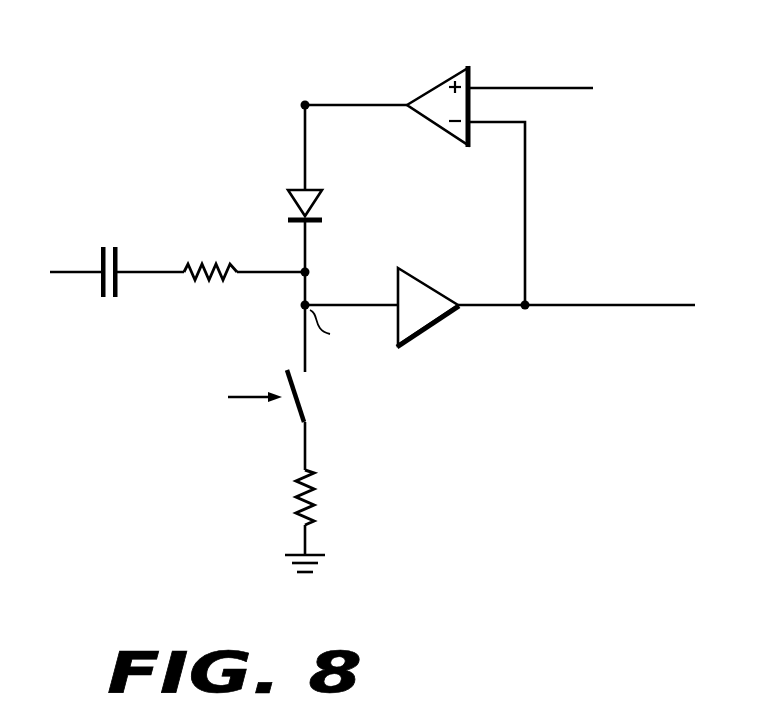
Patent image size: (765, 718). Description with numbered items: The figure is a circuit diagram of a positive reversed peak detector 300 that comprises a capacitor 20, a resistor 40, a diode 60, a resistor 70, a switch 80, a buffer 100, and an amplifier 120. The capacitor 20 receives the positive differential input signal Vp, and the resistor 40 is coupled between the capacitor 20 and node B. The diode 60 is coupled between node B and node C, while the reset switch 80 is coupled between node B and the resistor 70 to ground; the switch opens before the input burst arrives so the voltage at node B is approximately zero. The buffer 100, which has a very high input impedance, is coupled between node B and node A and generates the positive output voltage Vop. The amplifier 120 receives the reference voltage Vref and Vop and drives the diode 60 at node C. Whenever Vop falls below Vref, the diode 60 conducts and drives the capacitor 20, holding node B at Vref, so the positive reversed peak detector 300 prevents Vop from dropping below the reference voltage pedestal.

The positive reversed peak detector 300 is at (674, 56).
The capacitor 20 is at (118, 292).
The resistor 40 is at (196, 262).
The diode 60 is at (321, 196).
The amplifier 120 is at (433, 86).
The buffer 100 is at (432, 286).
The reset switch 80 is at (306, 396).
The resistor 70 is at (292, 498).